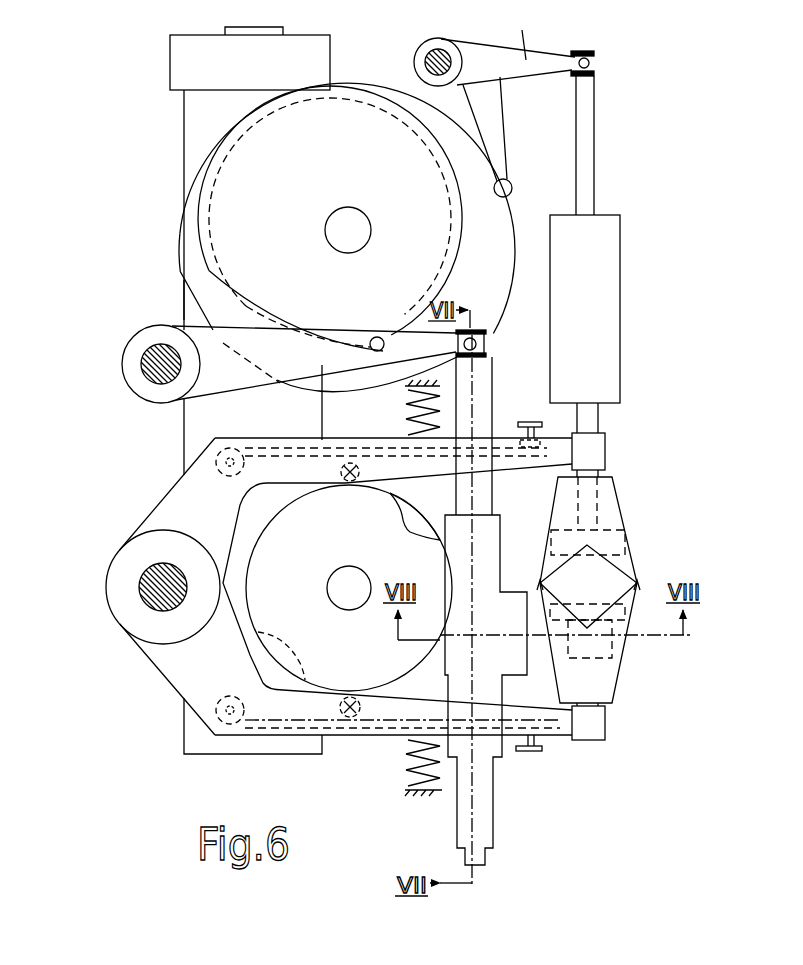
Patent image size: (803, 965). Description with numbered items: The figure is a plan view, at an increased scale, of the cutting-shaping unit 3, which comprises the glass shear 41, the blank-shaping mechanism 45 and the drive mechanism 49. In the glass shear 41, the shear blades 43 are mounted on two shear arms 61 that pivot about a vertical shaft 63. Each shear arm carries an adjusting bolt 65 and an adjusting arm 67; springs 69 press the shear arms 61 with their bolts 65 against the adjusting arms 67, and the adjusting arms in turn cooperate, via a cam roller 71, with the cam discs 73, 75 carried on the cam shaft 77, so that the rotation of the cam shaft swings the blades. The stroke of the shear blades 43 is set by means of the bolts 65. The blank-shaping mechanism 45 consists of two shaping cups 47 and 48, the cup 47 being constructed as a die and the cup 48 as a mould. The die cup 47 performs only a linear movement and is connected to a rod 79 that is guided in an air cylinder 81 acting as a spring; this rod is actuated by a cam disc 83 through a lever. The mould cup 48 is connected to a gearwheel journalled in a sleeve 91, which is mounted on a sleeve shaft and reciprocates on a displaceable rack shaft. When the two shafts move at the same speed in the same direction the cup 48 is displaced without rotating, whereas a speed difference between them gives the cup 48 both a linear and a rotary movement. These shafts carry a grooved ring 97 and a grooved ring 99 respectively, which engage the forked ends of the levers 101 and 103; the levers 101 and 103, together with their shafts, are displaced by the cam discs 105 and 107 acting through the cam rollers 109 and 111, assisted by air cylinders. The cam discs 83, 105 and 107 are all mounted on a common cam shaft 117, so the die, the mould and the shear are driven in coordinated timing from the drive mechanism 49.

The cutting-shaping unit 3 is at (85, 277).
The glass shear 41 is at (160, 491).
The shear blades 43 is at (617, 512).
The blank-shaping mechanism 45 is at (584, 454).
The shaping cup 47 is at (622, 548).
The shaping cup 48 is at (627, 614).
The drive mechanism 49 is at (180, 287).
The shear arms 61 is at (566, 466).
The vertical shaft 63 is at (147, 578).
The adjusting bolt 65 is at (526, 424).
The adjusting arm 67 is at (249, 446).
The springs 69 is at (404, 408).
The cam roller 71 is at (341, 466).
The cam disc 73 is at (433, 528).
The cam disc 75 is at (406, 531).
The cam shaft 77 is at (333, 570).
The rod 79 is at (594, 191).
The air cylinder 81 is at (585, 309).
The cam disc 83 is at (500, 278).
The sleeve 91 is at (492, 538).
The grooved ring 97 is at (500, 353).
The grooved ring 99 is at (487, 337).
The lever 101 is at (276, 346).
The lever 103 is at (203, 342).
The cam disc 105 is at (458, 228).
The cam disc 107 is at (446, 183).
The cam roller 109 is at (364, 320).
The cam roller 111 is at (377, 337).
The common cam shaft 117 is at (328, 229).